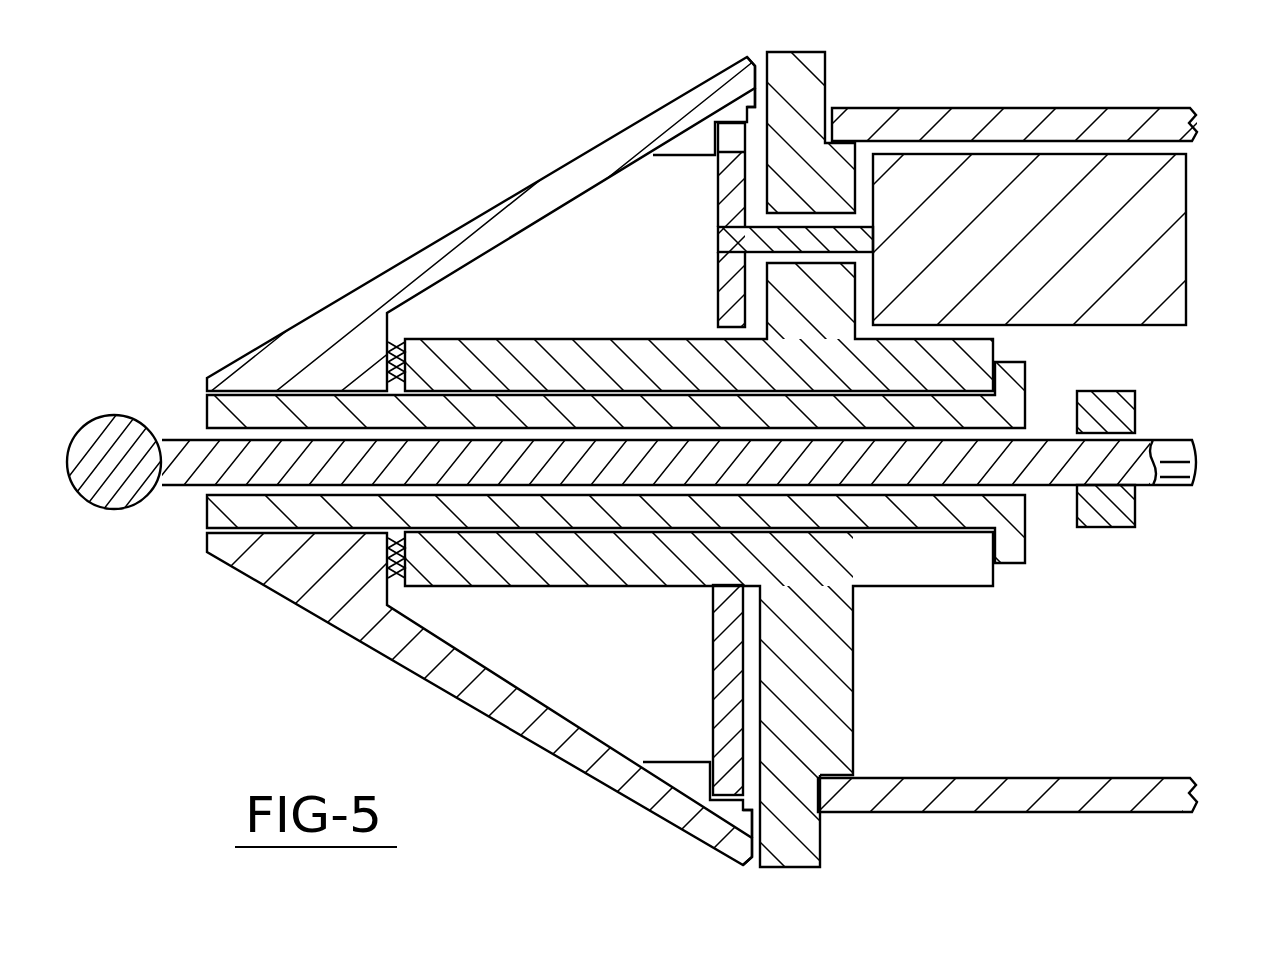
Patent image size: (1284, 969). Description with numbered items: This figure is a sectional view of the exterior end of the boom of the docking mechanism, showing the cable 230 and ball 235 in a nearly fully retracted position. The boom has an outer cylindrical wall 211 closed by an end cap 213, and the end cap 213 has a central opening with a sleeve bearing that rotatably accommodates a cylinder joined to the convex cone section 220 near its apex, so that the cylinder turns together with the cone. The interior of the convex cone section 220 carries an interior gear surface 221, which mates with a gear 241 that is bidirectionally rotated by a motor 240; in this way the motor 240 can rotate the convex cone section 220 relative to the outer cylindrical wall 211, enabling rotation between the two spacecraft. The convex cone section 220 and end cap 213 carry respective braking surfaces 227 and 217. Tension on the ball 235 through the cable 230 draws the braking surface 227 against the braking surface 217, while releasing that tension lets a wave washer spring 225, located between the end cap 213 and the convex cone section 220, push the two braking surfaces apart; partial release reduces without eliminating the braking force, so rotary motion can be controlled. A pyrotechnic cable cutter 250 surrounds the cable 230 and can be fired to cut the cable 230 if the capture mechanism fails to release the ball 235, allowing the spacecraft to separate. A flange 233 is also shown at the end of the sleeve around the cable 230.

The outer cylindrical wall 211 is at (985, 105).
The end cap 213 is at (803, 297).
The braking surface 217 is at (771, 68).
The convex cone section 220 is at (317, 312).
The interior gear surface 221 is at (725, 682).
The wave washer spring 225 is at (395, 337).
The braking surface 227 is at (753, 70).
The cable 230 is at (173, 440).
The sleeve flange 233 is at (1013, 363).
The ball 235 is at (130, 373).
The motor 240 is at (1143, 210).
The gear 241 is at (712, 287).
The pyrotechnic cable cutter 250 is at (1103, 391).